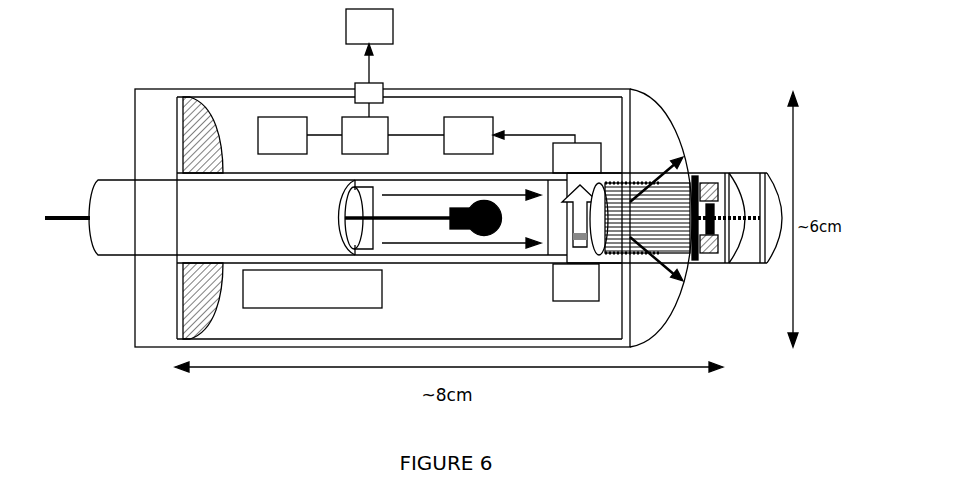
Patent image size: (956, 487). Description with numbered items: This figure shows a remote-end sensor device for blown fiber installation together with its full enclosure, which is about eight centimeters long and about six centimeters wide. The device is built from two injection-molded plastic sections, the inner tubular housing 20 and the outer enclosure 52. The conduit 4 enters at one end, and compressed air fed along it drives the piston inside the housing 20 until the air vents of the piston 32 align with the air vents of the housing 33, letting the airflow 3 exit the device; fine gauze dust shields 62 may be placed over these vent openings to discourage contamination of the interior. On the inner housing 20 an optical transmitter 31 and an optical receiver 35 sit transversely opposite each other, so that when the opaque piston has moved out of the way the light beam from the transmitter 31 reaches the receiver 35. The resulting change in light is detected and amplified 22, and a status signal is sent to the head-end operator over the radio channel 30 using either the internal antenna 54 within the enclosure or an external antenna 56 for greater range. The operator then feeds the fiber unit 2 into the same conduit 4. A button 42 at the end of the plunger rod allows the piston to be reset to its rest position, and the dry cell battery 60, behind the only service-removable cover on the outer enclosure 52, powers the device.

The fiber unit 2 is at (63, 222).
The airflow 3 is at (664, 207).
The conduit 4 is at (122, 257).
The inner tubular housing 20 is at (440, 265).
The amplifier 22 is at (468, 135).
The radio channel 30 is at (365, 135).
The optical transmitter 31 is at (576, 282).
The air vents of the piston 32 is at (670, 260).
The air vents of the housing 33 is at (670, 260).
The optical receiver 35 is at (577, 158).
The button 42 is at (777, 190).
The outer enclosure 52 is at (452, 93).
The internal antenna 54 is at (282, 135).
The external antenna 56 is at (369, 26).
The dry cell battery 60 is at (312, 289).
The gauze dust shields 62 is at (687, 270).